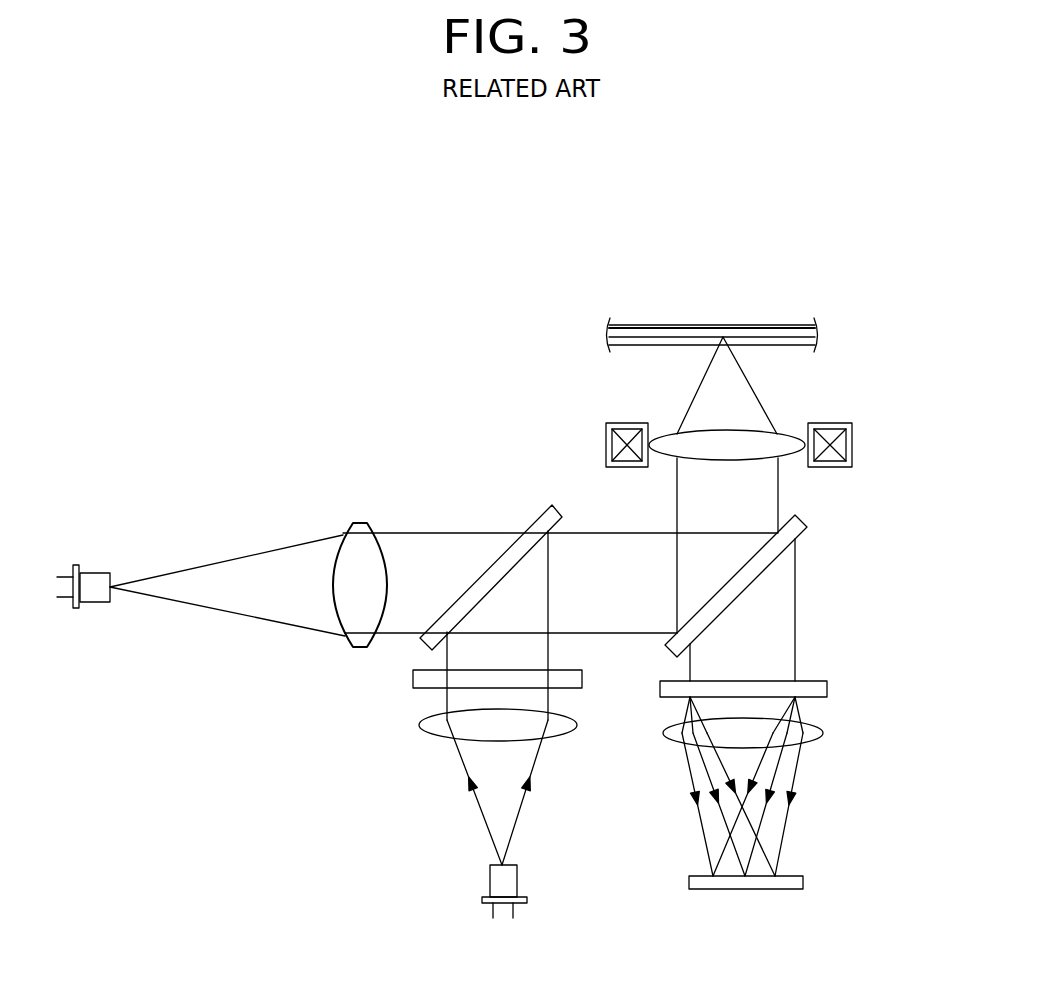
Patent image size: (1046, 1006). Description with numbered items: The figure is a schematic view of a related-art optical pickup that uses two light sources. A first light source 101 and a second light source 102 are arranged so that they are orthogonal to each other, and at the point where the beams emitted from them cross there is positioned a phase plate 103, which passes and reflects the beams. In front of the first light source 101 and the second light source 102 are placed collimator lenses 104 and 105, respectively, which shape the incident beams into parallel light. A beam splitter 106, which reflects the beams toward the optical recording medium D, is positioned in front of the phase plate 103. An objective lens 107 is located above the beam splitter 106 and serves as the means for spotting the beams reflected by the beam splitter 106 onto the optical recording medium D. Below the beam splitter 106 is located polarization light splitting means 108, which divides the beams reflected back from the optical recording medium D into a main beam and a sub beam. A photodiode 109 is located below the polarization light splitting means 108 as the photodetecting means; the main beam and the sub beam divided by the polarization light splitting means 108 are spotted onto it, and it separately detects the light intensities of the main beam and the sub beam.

The first light source 101 is at (92, 573).
The second light source 102 is at (490, 878).
The phase plate 103 is at (478, 577).
The collimator lens 104 is at (334, 573).
The collimator lens 105 is at (423, 722).
The beam splitter 106 is at (758, 575).
The objective lens 107 is at (790, 432).
The polarization light splitting means 108 is at (807, 680).
The photodiode 109 is at (743, 889).
The optical recording medium D is at (701, 325).